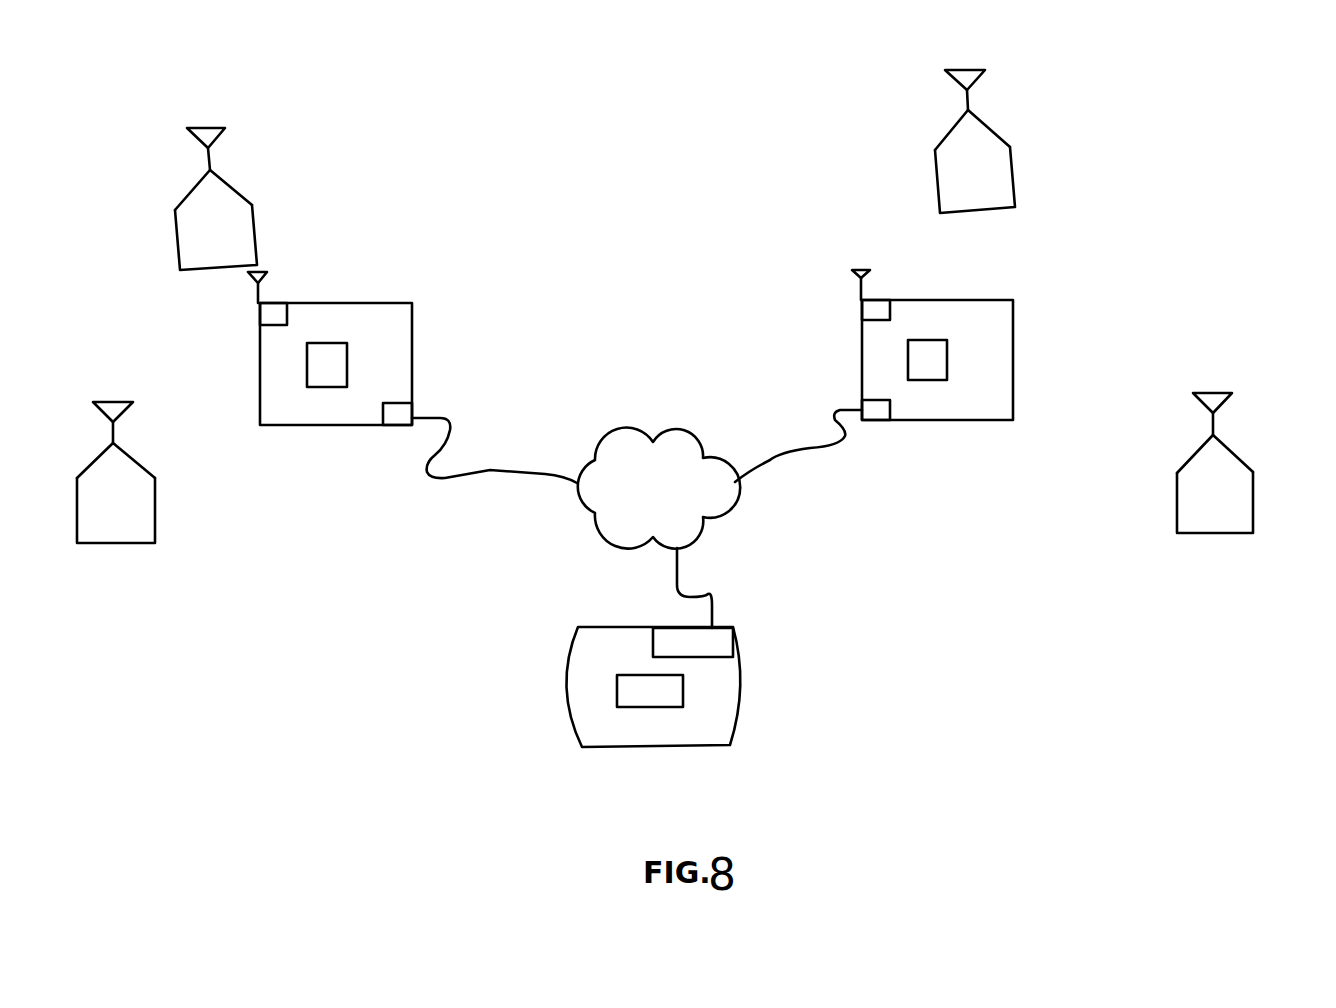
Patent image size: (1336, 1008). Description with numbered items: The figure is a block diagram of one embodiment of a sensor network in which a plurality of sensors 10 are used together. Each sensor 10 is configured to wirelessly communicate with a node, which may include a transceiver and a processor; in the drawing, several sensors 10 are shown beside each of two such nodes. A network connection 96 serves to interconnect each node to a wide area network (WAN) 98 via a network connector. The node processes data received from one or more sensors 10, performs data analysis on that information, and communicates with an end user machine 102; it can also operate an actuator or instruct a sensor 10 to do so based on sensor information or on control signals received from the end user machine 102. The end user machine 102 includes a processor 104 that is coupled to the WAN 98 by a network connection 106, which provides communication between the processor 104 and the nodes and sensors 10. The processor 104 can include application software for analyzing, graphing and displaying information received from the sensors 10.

The sensor 10 is at (122, 473).
The network connection 96 is at (487, 470).
The wide area network (WAN) 98 is at (673, 427).
The end user machine 102 is at (656, 654).
The processor 104 is at (627, 692).
The network connection 106 is at (755, 616).